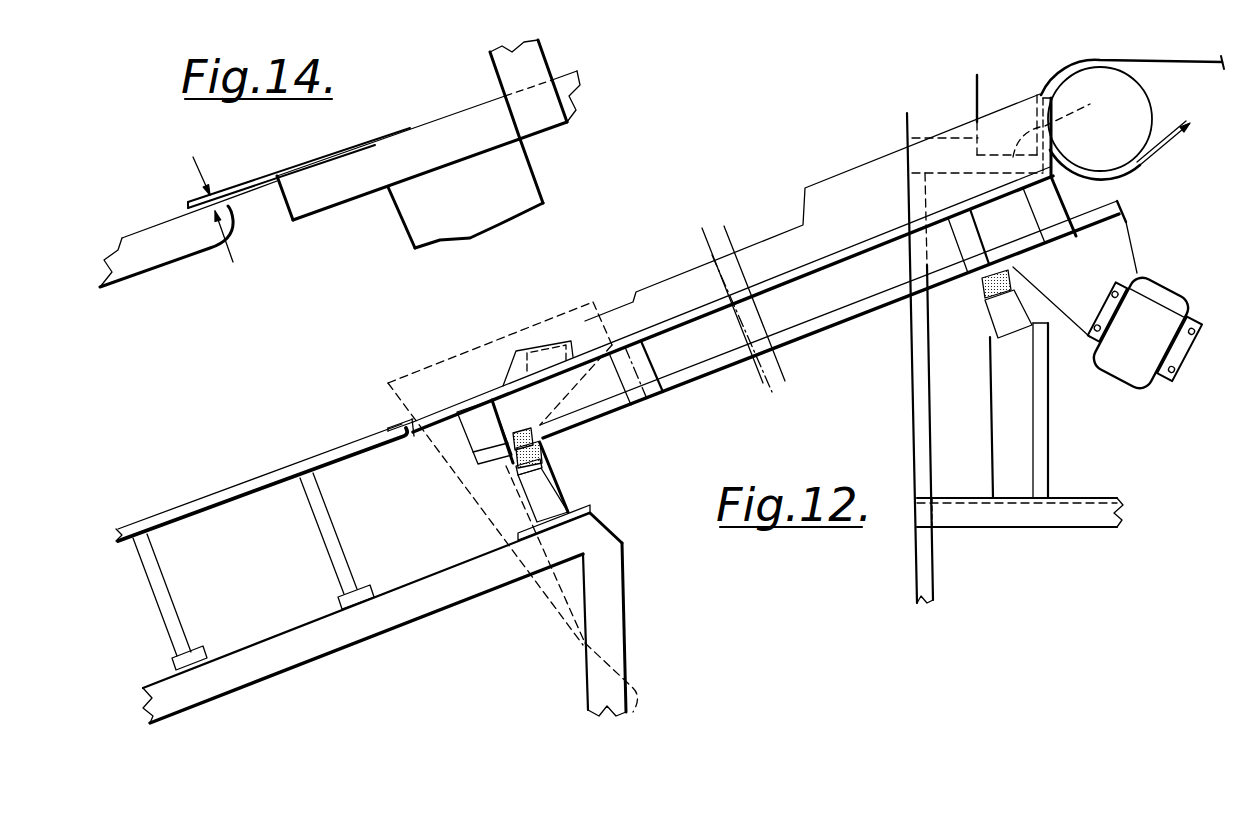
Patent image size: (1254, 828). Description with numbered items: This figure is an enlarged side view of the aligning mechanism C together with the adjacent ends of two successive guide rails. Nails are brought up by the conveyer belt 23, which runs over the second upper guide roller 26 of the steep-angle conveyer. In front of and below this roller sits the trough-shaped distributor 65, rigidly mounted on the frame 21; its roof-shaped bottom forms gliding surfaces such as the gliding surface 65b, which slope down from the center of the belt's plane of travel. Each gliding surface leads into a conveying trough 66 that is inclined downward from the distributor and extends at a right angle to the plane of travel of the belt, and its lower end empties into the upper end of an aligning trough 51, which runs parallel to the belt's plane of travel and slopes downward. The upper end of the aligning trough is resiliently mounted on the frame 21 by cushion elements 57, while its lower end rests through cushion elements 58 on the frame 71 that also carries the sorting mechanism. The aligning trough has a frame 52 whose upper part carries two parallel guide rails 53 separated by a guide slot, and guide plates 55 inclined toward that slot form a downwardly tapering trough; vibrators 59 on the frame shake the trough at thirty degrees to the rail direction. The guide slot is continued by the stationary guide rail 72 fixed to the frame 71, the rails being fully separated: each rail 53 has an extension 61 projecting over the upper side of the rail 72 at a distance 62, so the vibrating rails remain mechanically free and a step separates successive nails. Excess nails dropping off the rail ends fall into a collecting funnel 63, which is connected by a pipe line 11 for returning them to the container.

In FIG. 12, the pipe line 11 is at (547, 600).
In FIG. 12, the frame 21 is at (1087, 510).
In FIG. 12, the conveyer belt 23 is at (1161, 145).
In FIG. 12, the second upper guide roller 26 is at (1135, 107).
In FIG. 12, the aligning trough 51 is at (350, 430).
In FIG. 12, the frame 52 is at (808, 334).
In FIG. 14, the guide rails 53 is at (482, 140).
In FIG. 12, the guide rails 53 is at (668, 328).
In FIG. 12, the guide plates 55 is at (867, 181).
In FIG. 12, the cushion elements 57 is at (980, 292).
In FIG. 12, the cushion elements 58 is at (541, 452).
In FIG. 12, the vibrators 59 is at (1157, 288).
In FIG. 14, the extension 61 is at (257, 178).
In FIG. 12, the extension 61 is at (395, 424).
In FIG. 14, the distance 62 is at (215, 203).
In FIG. 12, the collecting funnel 63 is at (447, 360).
In FIG. 12, the trough-shaped distributor 65 is at (980, 90).
In FIG. 12, the gliding surface 65b is at (1061, 117).
In FIG. 12, the conveying trough 66 is at (908, 125).
In FIG. 12, the frame 71 is at (407, 618).
In FIG. 14, the guide rail 72 is at (178, 247).
In FIG. 12, the guide rail 72 is at (233, 491).
In FIG. 12, the aligning mechanism C is at (554, 294).